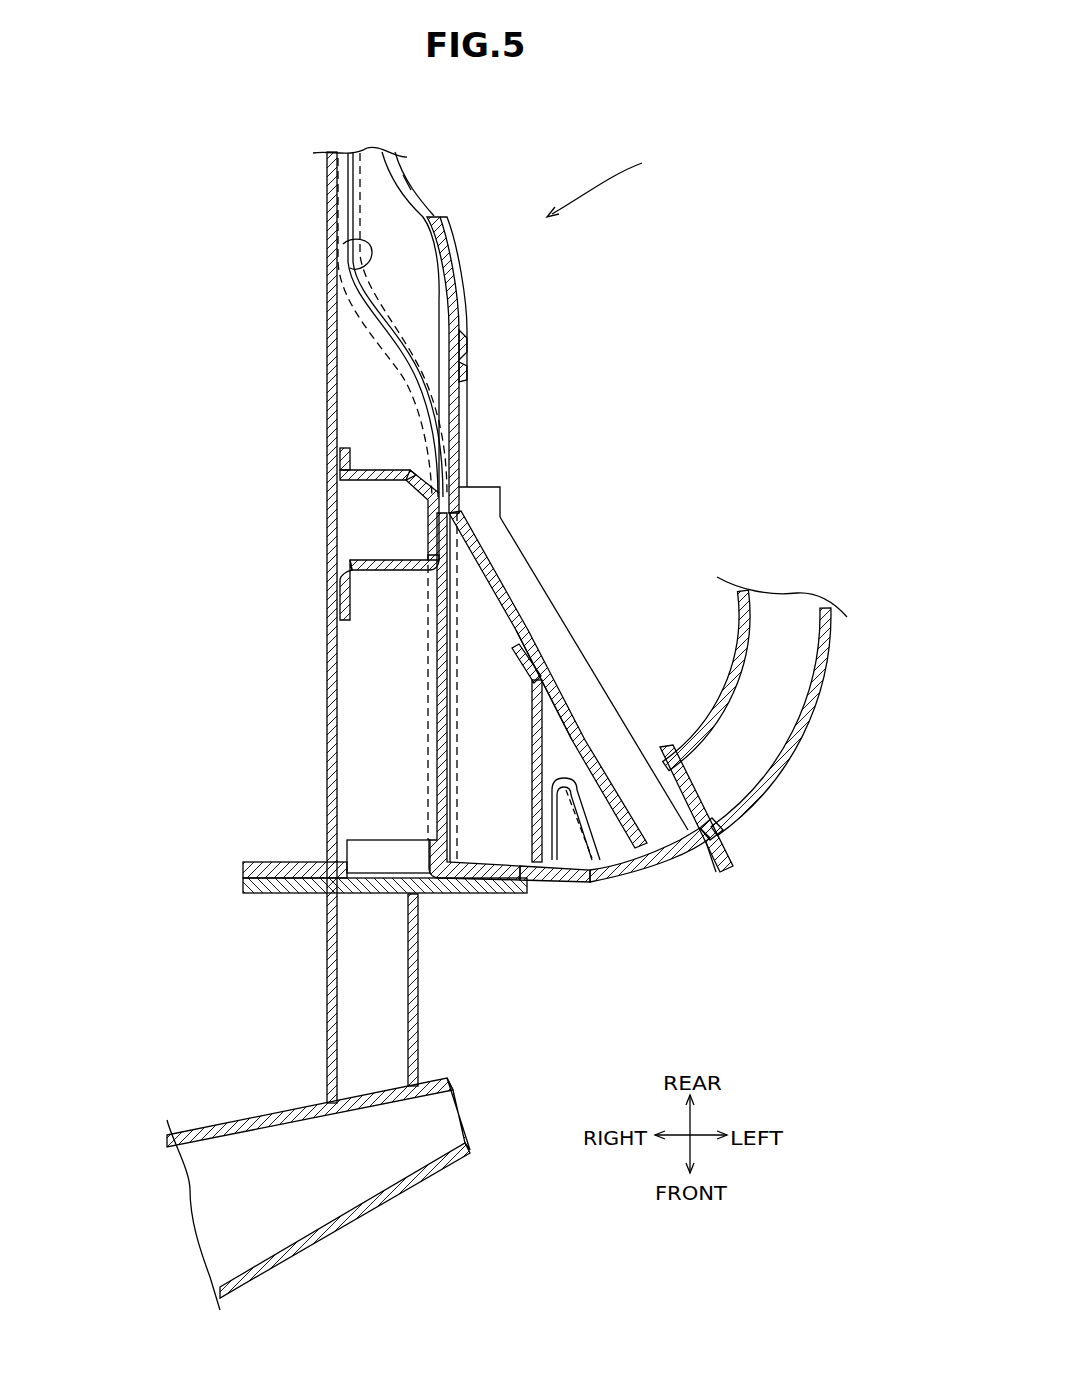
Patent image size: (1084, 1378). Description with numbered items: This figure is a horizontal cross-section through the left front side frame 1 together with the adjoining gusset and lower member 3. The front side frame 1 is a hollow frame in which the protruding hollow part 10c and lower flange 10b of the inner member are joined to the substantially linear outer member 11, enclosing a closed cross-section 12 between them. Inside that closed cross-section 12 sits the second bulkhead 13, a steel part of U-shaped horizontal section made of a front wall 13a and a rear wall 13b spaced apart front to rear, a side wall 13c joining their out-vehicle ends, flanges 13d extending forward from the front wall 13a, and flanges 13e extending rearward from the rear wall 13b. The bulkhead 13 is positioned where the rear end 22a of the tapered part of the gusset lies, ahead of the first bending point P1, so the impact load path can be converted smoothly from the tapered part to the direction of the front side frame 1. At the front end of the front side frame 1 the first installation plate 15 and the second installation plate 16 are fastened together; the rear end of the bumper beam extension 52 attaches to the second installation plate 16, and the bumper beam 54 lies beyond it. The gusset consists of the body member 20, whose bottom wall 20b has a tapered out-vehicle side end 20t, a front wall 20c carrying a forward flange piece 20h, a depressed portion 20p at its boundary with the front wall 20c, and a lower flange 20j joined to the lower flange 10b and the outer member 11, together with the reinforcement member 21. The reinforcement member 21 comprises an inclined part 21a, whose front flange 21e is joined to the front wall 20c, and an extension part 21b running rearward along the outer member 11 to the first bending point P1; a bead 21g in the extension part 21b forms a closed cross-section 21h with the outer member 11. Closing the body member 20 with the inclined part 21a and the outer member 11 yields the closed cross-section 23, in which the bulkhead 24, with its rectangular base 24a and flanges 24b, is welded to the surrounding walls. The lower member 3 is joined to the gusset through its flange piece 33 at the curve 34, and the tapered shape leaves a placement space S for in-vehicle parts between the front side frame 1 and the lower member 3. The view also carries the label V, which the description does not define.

The front side frame 1 is at (325, 313).
The lower member 3 is at (773, 706).
The lower flange 10b is at (433, 497).
The protruding hollow part 10c is at (327, 362).
The outer member 11 is at (405, 182).
The closed cross-section 12 is at (398, 739).
The bulkhead 13 is at (339, 553).
The front wall 13a is at (370, 563).
The rear wall 13b is at (375, 478).
The side wall 13c is at (427, 517).
The flange 13d is at (297, 592).
The flange 13e is at (348, 455).
The first installation plate 15 is at (437, 885).
The second installation plate 16 is at (278, 893).
The body member 20 is at (586, 750).
The bottom wall 20b is at (633, 856).
The front wall 20c is at (487, 882).
The flange piece 20h is at (713, 867).
The lower flange 20j is at (458, 787).
The depressed portion 20p is at (587, 877).
The out-vehicle side end 20t is at (518, 548).
The reinforcement member 21 is at (625, 532).
The inclined part 21a is at (535, 645).
The extension part 21b is at (458, 428).
The front flange 21e is at (737, 800).
The bead 21g is at (463, 370).
The closed cross-section 21h is at (463, 345).
The rear end 22a is at (468, 516).
The closed cross-section 23 is at (508, 739).
The bulkhead 24 is at (593, 794).
The base 24a is at (550, 746).
The flange 24b is at (553, 682).
The flange piece 33 is at (732, 843).
The curve 34 is at (796, 738).
The bumper beam extension 52 is at (420, 1005).
The bumper beam 54 is at (415, 1198).
The first bending point P1 is at (343, 244).
The placement space S is at (666, 449).
The vehicle V is at (611, 183).